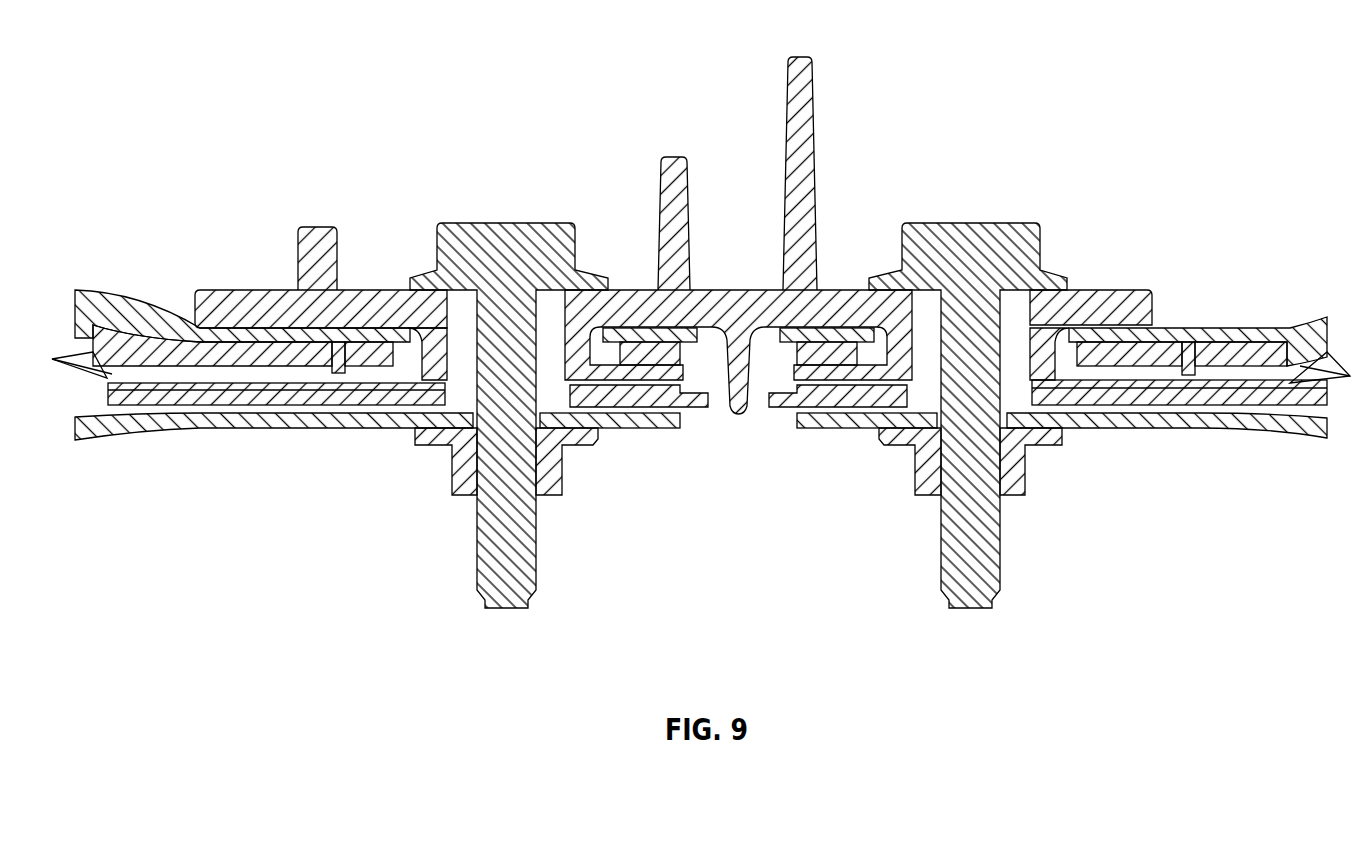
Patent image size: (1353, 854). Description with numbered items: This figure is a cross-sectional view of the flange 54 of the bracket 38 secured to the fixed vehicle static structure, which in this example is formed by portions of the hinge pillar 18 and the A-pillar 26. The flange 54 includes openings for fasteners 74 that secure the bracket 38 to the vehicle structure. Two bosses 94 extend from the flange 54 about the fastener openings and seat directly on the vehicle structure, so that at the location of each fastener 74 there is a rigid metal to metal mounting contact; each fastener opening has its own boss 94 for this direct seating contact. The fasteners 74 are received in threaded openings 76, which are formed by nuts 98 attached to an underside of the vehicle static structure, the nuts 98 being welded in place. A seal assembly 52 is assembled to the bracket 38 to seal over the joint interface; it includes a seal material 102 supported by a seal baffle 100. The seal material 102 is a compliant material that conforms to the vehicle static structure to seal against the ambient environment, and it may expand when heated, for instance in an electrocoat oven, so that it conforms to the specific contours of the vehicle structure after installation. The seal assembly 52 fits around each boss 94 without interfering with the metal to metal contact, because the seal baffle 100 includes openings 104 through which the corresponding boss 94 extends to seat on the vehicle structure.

The hinge pillar 18 is at (217, 423).
The A-pillar 26 is at (280, 397).
The bracket 38 is at (817, 132).
The seal assembly 52 is at (701, 302).
The flange 54 is at (1113, 300).
The fasteners 74 is at (508, 235).
The threaded openings 76 is at (458, 381).
The bosses 94 is at (432, 352).
The nuts 98 is at (552, 470).
The seal baffle 100 is at (1302, 337).
The seal material 102 is at (690, 327).
The openings 104 is at (604, 360).